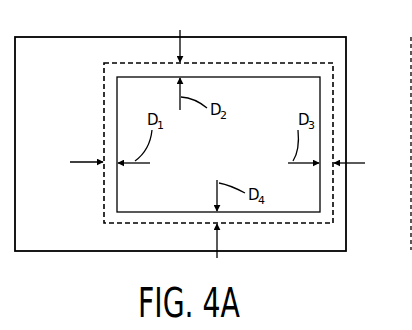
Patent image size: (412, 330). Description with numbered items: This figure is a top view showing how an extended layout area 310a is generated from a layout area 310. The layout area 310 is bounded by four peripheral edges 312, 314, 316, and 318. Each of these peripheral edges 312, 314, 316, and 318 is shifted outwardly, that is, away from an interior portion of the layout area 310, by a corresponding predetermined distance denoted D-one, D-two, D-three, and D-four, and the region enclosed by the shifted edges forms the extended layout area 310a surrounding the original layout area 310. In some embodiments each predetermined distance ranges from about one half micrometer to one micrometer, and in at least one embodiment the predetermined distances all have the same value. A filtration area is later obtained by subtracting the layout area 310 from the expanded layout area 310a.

The layout area 310 is at (316, 55).
The extended layout area 310a is at (153, 52).
The peripheral edge 312 is at (102, 135).
The peripheral edge 314 is at (255, 62).
The peripheral edge 316 is at (338, 122).
The peripheral edge 318 is at (180, 223).